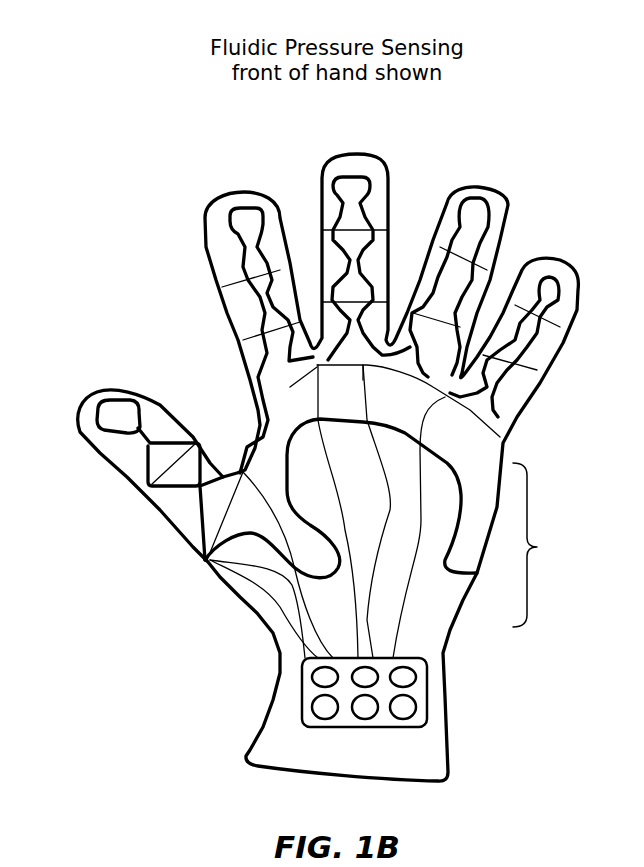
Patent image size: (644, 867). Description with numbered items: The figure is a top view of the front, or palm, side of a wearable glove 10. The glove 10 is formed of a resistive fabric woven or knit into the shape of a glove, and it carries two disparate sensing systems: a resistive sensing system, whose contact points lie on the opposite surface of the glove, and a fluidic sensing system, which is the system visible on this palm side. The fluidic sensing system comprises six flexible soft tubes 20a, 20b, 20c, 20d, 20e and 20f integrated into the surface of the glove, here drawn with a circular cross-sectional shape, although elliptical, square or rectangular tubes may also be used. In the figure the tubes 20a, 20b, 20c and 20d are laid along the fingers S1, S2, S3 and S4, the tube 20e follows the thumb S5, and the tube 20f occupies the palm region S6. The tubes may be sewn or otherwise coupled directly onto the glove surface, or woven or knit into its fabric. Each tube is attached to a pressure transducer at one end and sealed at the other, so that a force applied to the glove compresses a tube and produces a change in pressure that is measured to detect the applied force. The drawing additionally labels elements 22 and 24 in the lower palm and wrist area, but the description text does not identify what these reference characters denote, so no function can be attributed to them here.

The wearable glove 10 is at (190, 143).
The tube 20a is at (551, 254).
The tube 20b is at (462, 186).
The tube 20c is at (325, 168).
The tube 20d is at (236, 259).
The tube 20e is at (148, 500).
The tube 20f is at (453, 463).
The fluid channels / tubing 22 is at (250, 585).
The connector port block 24 is at (427, 690).
The finger S1 is at (226, 182).
The finger S2 is at (356, 134).
The finger S3 is at (492, 172).
The finger S4 is at (586, 250).
The thumb S5 is at (81, 377).
The palm region S6 is at (542, 545).